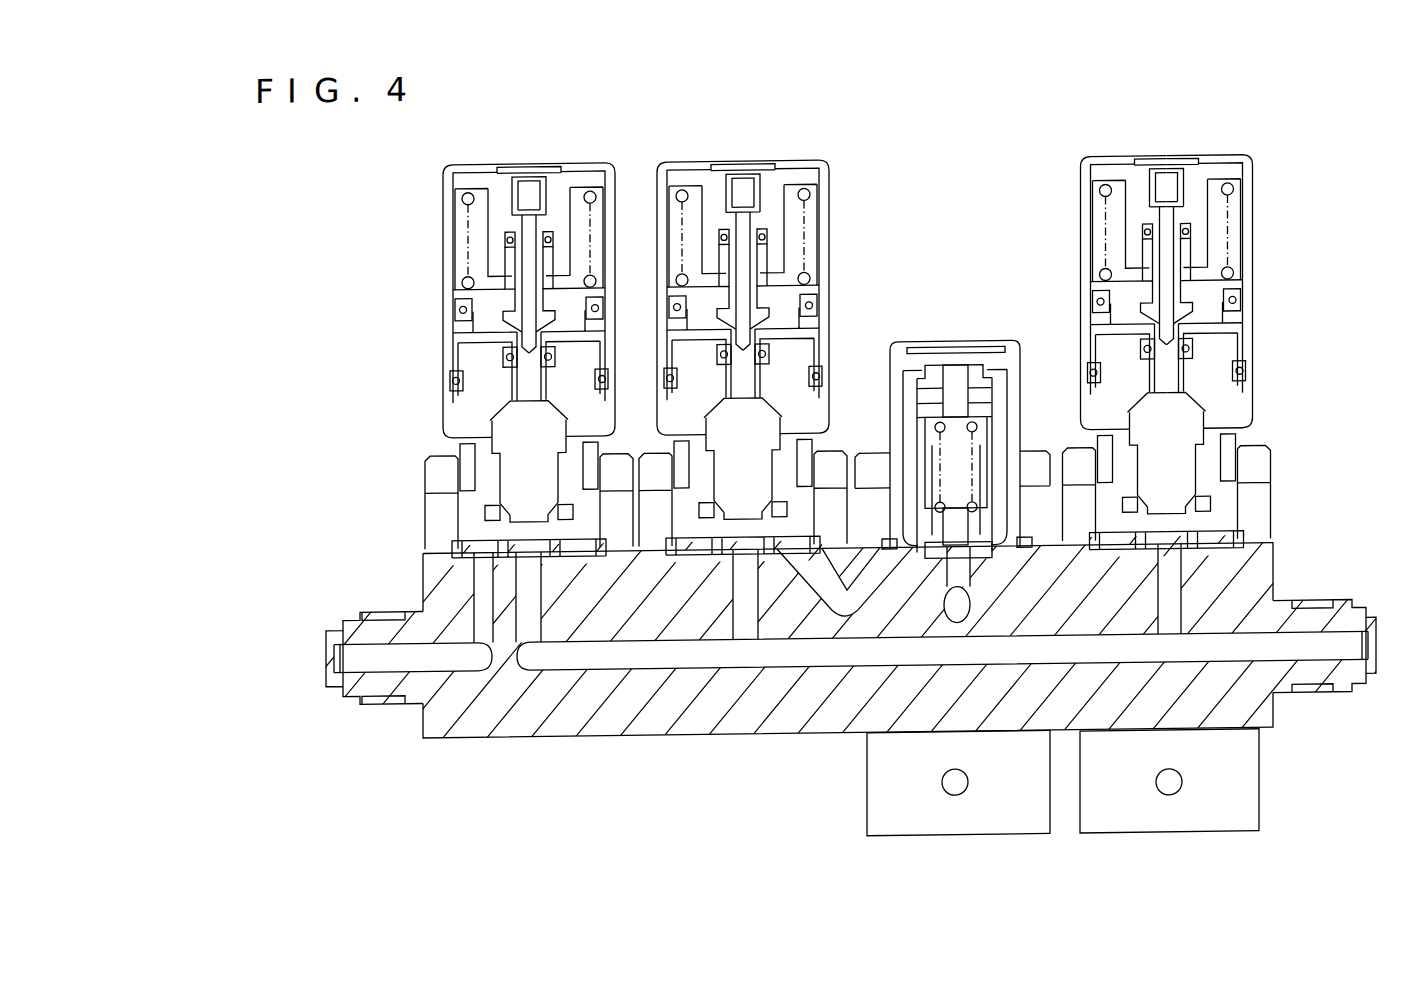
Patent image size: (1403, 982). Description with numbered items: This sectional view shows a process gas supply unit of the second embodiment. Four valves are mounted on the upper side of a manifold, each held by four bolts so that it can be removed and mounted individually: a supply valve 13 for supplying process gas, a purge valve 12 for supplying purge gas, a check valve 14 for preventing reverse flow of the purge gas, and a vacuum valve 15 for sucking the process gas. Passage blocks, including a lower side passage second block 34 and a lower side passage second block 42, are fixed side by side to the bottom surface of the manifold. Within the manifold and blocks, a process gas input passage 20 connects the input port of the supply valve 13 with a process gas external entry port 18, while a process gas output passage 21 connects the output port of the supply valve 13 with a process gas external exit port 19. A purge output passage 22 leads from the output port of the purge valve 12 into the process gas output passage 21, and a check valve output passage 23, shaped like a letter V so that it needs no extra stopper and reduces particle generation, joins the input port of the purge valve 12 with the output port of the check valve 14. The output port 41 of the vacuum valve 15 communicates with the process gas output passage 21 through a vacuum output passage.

The purge valve 12 is at (745, 157).
The supply valve 13 is at (540, 154).
The check valve 14 is at (960, 338).
The vacuum valve 15 is at (1118, 153).
The process gas external entry port 18 is at (330, 655).
The process gas external exit port 19 is at (1378, 655).
The process gas input passage 20 is at (385, 654).
The process gas output passage 21 is at (750, 657).
The purge output passage 22 is at (733, 590).
The check valve output passage 23 is at (818, 592).
The lower side passage second block 34 is at (1027, 829).
The output port of the vacuum valve 41 is at (1170, 566).
The lower side passage second block 42 is at (1095, 831).